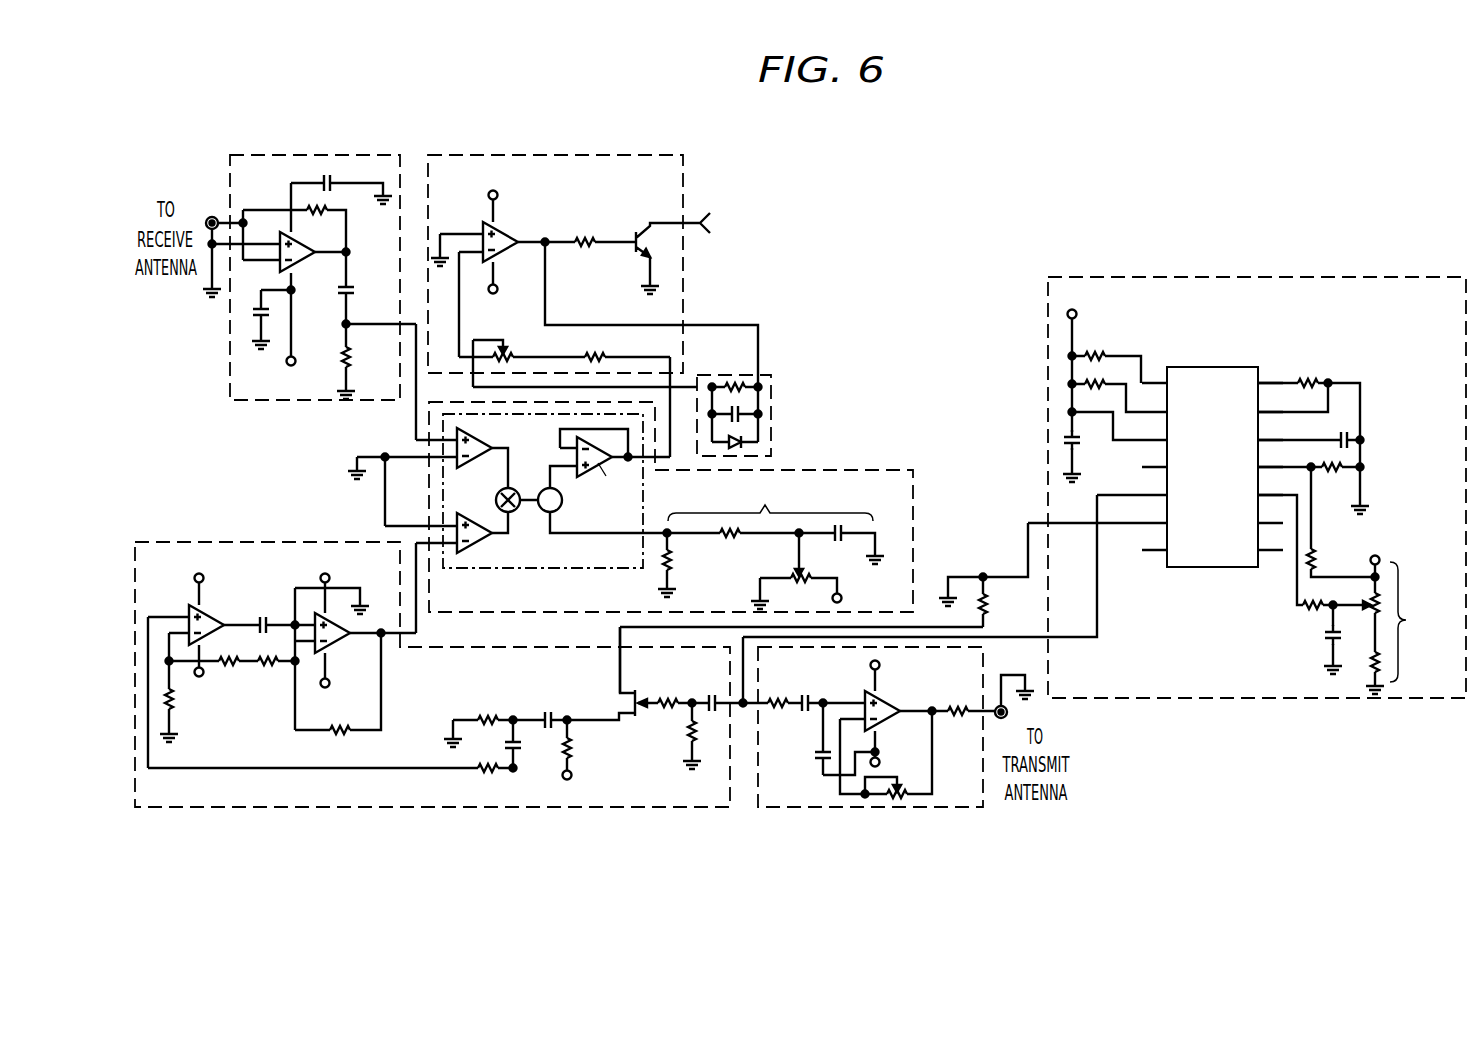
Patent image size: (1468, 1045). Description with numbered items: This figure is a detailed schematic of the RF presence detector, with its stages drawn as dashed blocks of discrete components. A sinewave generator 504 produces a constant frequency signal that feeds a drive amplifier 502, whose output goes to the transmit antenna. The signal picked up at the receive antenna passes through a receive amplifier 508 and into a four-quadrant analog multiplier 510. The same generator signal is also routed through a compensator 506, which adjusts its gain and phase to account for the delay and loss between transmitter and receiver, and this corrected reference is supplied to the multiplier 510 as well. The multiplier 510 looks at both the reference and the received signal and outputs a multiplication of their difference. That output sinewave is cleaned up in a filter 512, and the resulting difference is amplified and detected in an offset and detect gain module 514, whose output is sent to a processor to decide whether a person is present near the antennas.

The drive amplifier 502 is at (871, 808).
The sinewave generator 504 is at (1258, 700).
The compensator 506 is at (431, 808).
The receive amplifier 508 is at (313, 154).
The four-quadrant analog multiplier 510 is at (913, 497).
The filter 512 is at (771, 413).
The offset and detect gain module 514 is at (551, 154).